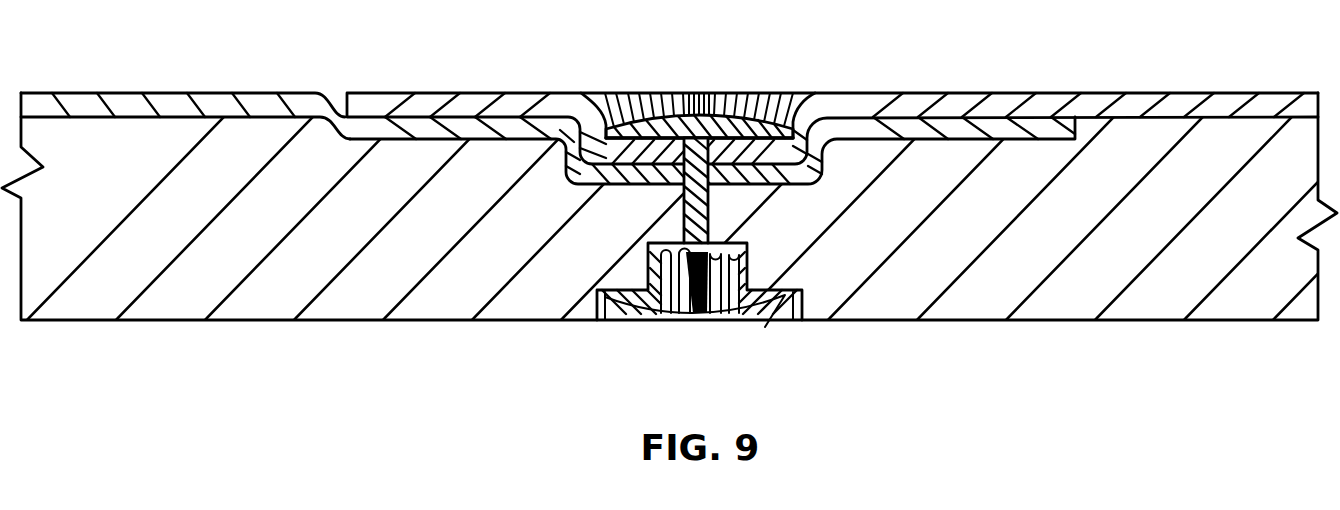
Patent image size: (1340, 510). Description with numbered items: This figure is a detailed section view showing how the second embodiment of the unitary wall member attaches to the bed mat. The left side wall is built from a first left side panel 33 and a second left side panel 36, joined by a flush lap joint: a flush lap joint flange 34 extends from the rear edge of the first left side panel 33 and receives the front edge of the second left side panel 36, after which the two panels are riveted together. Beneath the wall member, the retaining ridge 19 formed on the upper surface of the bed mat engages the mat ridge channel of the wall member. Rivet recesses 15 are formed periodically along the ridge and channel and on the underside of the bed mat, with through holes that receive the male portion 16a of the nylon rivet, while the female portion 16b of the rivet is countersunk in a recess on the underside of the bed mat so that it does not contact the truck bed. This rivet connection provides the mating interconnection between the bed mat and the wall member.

The rivet recess 15 is at (672, 84).
The male portion of nylon rivet 16a is at (722, 122).
The female portion of nylon rivet 16b is at (760, 310).
The retaining ridge 19 is at (1058, 237).
The first left side panel 33 is at (212, 102).
The flush lap joint flange 34 is at (413, 129).
The second left side panel 36 is at (1172, 92).